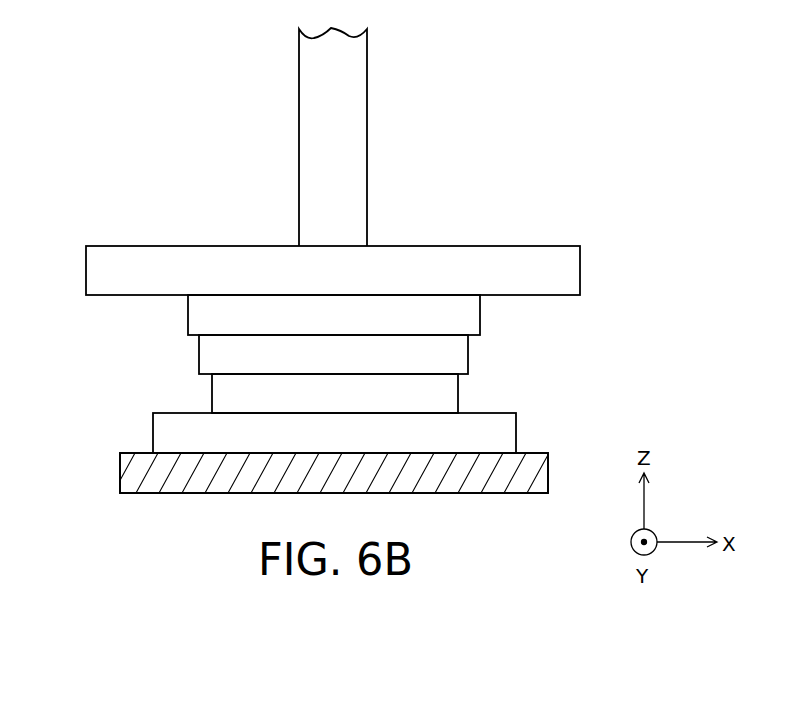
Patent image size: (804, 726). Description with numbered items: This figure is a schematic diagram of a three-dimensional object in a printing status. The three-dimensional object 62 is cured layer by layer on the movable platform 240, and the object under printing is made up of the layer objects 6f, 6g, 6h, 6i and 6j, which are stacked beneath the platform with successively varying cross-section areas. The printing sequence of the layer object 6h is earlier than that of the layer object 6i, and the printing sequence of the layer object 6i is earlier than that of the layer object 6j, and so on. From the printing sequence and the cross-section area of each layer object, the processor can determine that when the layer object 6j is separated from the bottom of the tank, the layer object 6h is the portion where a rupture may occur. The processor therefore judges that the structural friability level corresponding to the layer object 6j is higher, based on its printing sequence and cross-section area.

The movable platform 240 is at (340, 150).
The layer object 6f is at (472, 318).
The layer object 6g is at (452, 350).
The layer object 6h is at (448, 390).
The layer object 6i is at (500, 436).
The layer object 6j is at (530, 472).
The 3D object 62 is at (120, 480).